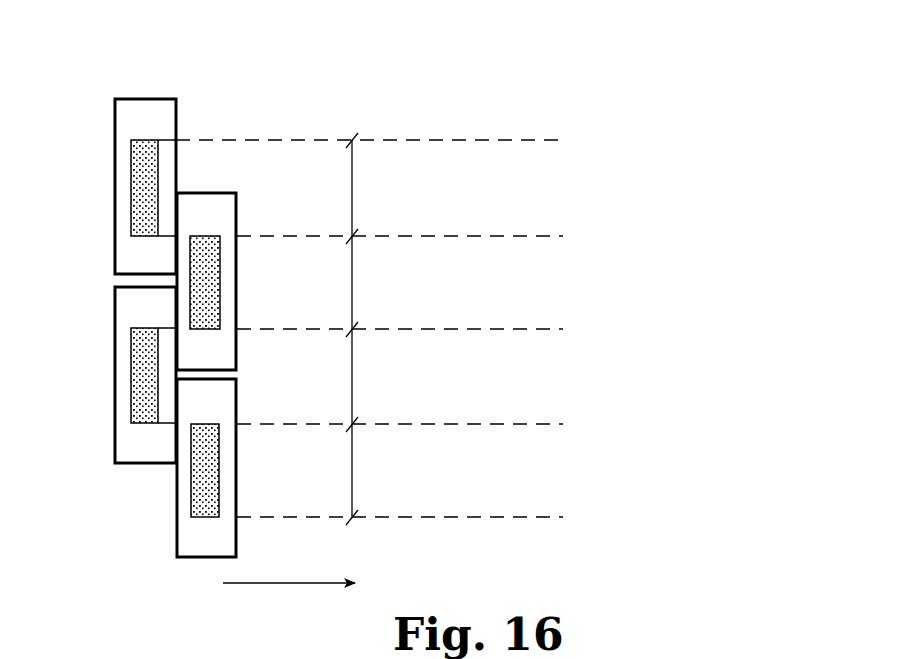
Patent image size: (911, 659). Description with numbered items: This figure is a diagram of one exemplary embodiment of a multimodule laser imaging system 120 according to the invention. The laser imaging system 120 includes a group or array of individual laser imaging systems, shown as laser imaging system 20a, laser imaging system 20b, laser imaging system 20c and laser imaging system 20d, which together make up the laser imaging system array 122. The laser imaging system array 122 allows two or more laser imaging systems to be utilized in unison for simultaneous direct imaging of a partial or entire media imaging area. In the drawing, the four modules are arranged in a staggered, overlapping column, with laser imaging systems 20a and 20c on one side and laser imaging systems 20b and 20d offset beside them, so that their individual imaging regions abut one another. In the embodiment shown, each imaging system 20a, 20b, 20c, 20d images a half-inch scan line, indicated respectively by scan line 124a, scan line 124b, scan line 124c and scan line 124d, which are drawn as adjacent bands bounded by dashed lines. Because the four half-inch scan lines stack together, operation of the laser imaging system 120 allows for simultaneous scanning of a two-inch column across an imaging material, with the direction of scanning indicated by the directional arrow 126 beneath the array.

The laser imaging system 120 is at (120, 50).
The laser imaging system array 122 is at (70, 136).
The laser imaging system 20a is at (118, 208).
The laser imaging system 20b is at (237, 287).
The laser imaging system 20c is at (118, 388).
The laser imaging system 20d is at (237, 487).
The scan line 124a is at (352, 187).
The scan line 124b is at (352, 283).
The scan line 124c is at (352, 378).
The scan line 124d is at (352, 468).
The directional arrow 126 is at (280, 583).